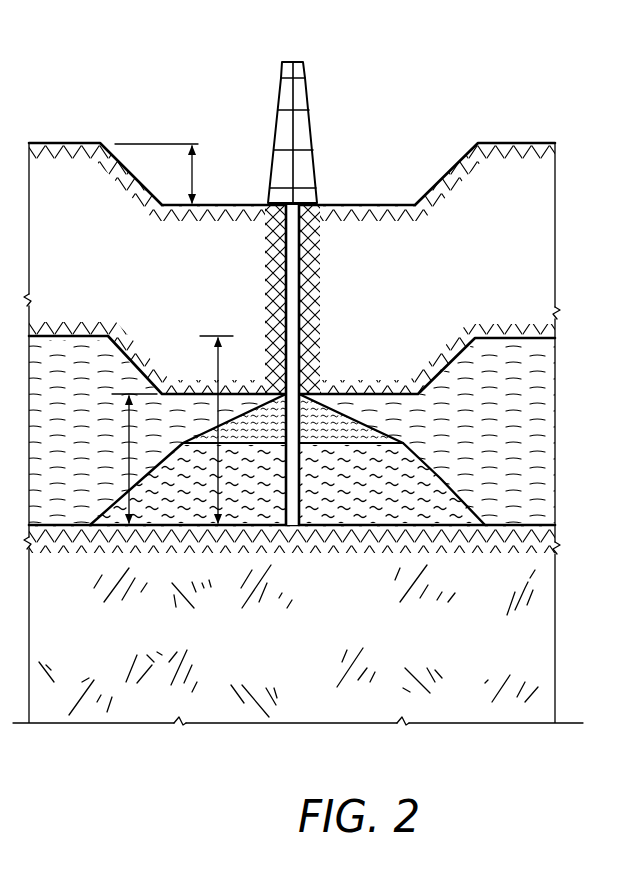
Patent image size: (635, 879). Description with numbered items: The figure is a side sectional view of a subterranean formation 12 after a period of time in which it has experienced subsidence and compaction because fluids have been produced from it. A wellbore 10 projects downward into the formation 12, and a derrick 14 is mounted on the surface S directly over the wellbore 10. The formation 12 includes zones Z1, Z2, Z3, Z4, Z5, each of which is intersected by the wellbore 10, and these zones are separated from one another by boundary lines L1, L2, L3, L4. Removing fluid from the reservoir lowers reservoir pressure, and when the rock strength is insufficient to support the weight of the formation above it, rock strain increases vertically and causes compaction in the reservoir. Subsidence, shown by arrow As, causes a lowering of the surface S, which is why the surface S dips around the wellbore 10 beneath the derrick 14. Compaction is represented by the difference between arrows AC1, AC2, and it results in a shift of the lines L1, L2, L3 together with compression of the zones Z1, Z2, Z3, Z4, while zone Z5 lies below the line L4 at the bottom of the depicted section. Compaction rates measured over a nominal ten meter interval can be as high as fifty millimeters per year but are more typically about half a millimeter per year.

The derrick 14 is at (278, 98).
The wellbore 10 is at (317, 256).
The subterranean formation 12 is at (540, 221).
The surface S is at (418, 150).
The arrow As is at (191, 178).
The zone Z1 is at (84, 312).
The zone Z2 is at (80, 400).
The zone Z3 is at (334, 418).
The zone Z4 is at (192, 505).
The zone Z5 is at (96, 646).
The arrow AC1 is at (216, 373).
The arrow AC2 is at (96, 458).
The boundary line L1 is at (383, 388).
The boundary line L2 is at (442, 479).
The boundary line L3 is at (348, 486).
The boundary line L4 is at (61, 490).